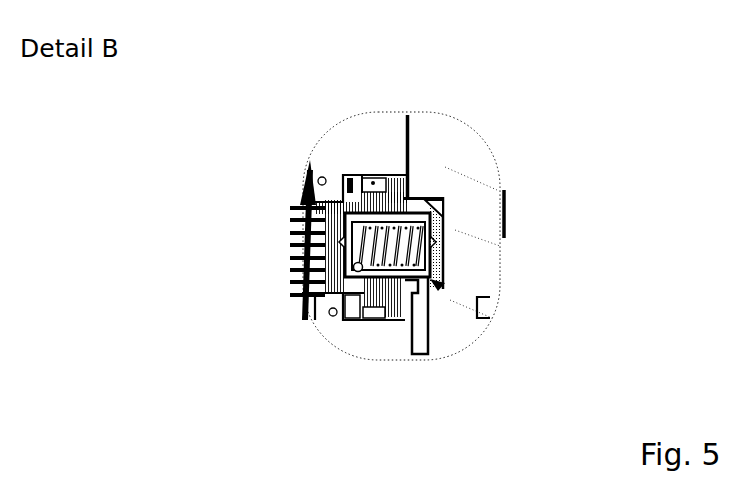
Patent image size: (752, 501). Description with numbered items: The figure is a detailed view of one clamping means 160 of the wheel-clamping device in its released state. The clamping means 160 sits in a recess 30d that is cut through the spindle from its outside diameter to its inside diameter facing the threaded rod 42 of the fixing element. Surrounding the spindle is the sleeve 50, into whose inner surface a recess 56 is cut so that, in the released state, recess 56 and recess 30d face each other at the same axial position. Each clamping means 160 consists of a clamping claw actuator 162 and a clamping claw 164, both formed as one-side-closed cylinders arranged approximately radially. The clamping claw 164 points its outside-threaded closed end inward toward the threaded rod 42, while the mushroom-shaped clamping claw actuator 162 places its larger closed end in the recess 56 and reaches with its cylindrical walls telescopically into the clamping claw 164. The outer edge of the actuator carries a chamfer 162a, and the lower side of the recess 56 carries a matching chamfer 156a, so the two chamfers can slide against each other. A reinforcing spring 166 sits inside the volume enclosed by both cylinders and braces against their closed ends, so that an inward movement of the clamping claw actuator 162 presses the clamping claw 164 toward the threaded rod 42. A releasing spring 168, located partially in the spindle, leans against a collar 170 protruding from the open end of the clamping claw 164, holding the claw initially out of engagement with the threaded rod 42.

The clamping means 160 is at (190, 139).
The recess 30d is at (362, 181).
The releasing spring 168 is at (374, 182).
The clamping claw 164 is at (385, 193).
The recess 56 is at (405, 203).
The clamping claw actuator 162 is at (445, 212).
The chamfer 162a is at (428, 203).
The sleeve 50 is at (470, 262).
The chamfer 156a is at (437, 284).
The threaded rod 42 is at (298, 217).
The reinforcing spring 166 is at (356, 267).
The collar 170 is at (375, 318).